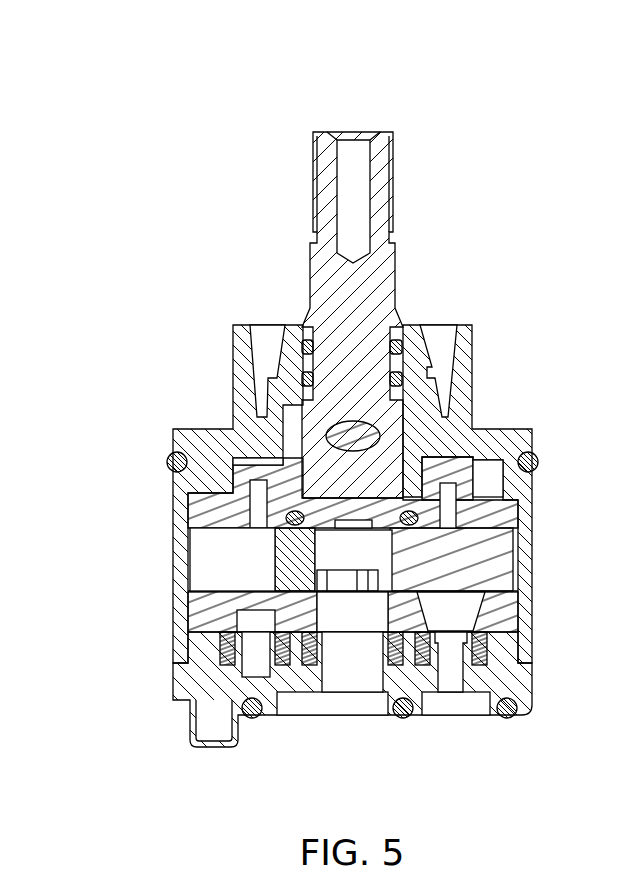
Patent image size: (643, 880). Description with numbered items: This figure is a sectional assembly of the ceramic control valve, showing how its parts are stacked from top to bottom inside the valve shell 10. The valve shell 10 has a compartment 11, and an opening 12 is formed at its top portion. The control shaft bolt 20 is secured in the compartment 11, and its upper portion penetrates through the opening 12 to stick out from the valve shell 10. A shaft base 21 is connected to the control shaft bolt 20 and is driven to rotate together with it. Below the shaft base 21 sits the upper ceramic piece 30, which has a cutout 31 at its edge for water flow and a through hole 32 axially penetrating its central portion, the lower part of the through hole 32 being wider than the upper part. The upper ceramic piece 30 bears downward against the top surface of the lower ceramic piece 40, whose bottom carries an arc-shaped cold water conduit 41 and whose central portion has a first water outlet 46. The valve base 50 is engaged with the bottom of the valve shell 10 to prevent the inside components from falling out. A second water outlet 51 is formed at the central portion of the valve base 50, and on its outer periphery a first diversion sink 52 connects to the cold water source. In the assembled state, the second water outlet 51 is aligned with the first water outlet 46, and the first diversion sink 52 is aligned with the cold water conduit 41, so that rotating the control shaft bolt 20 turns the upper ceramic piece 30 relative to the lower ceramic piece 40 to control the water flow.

The valve shell 10 is at (165, 418).
The compartment 11 is at (232, 462).
The opening 12 is at (303, 344).
The control shaft bolt 20 is at (378, 122).
The shaft base 21 is at (442, 475).
The upper ceramic piece 30 is at (515, 542).
The cutout 31 is at (183, 552).
The through hole 32 is at (370, 563).
The lower ceramic piece 40 is at (176, 609).
The cold water conduit 41 is at (463, 628).
The first water outlet 46 is at (370, 623).
The valve base 50 is at (158, 716).
The second water outlet 51 is at (370, 670).
The first diversion sink 52 is at (452, 672).